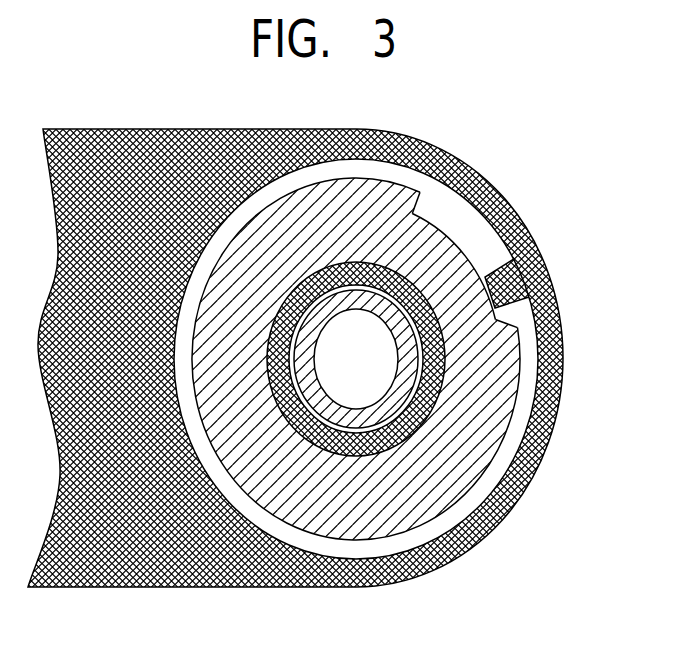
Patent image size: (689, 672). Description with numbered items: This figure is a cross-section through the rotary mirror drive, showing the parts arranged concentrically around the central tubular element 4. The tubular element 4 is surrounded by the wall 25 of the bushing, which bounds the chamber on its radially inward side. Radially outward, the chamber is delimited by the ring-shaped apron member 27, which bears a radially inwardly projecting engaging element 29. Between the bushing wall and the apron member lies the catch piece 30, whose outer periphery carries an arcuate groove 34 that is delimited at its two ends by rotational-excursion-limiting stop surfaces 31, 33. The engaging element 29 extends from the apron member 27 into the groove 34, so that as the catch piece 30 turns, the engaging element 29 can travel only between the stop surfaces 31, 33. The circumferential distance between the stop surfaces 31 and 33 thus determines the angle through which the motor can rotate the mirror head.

The ring-shaped apron member 27 is at (548, 406).
The engaging element 29 is at (513, 283).
The catch piece 30 is at (476, 448).
The arcuate groove 34 is at (450, 237).
The stop surface 31 is at (420, 200).
The stop surface 33 is at (510, 318).
The wall of bushing 25 is at (413, 437).
The tubular element 4 is at (357, 413).